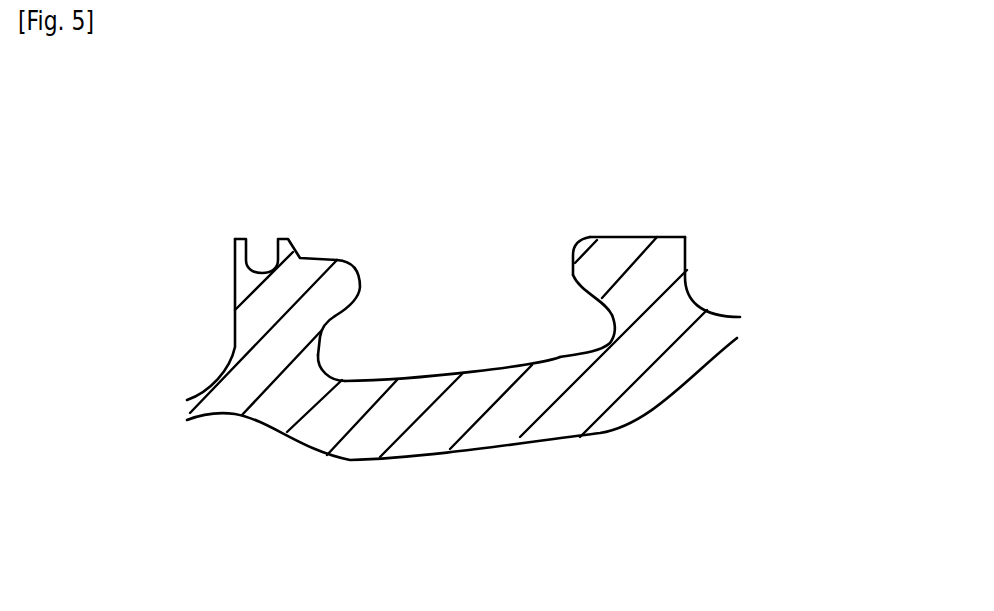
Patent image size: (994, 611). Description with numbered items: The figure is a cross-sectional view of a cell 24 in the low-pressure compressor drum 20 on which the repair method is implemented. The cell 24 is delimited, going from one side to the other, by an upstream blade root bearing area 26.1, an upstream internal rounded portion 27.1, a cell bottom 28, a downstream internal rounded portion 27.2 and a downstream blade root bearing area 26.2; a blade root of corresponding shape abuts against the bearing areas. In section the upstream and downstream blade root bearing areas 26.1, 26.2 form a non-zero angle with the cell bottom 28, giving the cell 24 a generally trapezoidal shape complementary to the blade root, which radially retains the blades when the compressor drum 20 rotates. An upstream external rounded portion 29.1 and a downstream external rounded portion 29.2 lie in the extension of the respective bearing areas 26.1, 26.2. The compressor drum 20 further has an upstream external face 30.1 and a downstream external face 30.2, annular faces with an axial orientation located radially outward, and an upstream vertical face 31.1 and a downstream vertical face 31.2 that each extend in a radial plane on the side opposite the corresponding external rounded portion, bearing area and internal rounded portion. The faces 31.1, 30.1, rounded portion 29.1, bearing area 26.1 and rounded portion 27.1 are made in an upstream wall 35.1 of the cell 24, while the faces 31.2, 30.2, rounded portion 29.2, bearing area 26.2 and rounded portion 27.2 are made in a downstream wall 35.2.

The compressor drum 20 is at (471, 318).
The cell 24 is at (497, 293).
The upstream blade root bearing area 26.1 is at (327, 322).
The downstream blade root bearing area 26.2 is at (603, 298).
The upstream internal rounded portion 27.1 is at (318, 360).
The downstream internal rounded portion 27.2 is at (607, 337).
The cell bottom 28 is at (473, 370).
The upstream external rounded portion 29.1 is at (360, 292).
The downstream external rounded portion 29.2 is at (577, 243).
The upstream external face 30.1 is at (313, 260).
The downstream external face 30.2 is at (626, 237).
The upstream vertical face 31.1 is at (235, 257).
The downstream vertical face 31.2 is at (688, 247).
The upstream wall 35.1 is at (258, 312).
The downstream wall 35.2 is at (652, 293).